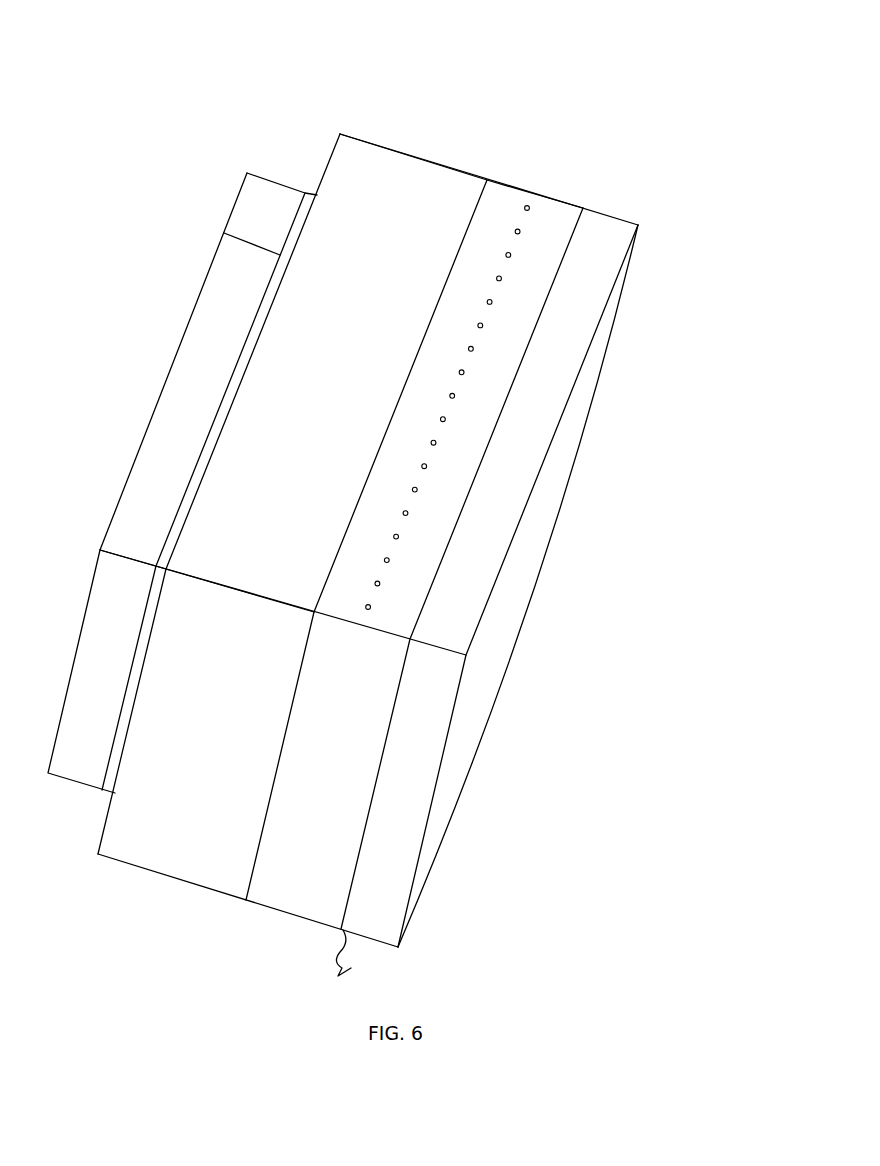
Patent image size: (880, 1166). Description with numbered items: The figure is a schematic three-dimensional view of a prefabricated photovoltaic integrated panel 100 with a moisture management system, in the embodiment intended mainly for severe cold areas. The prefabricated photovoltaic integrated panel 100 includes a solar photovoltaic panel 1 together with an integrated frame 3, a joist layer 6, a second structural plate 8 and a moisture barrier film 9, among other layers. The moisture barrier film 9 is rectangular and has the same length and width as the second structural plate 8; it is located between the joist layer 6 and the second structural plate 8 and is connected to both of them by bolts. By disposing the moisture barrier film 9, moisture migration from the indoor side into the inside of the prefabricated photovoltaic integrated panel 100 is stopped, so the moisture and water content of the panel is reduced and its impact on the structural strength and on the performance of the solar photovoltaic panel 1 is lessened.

The prefabricated photovoltaic integrated panel 100 is at (228, 138).
The solar photovoltaic panel 1 is at (580, 410).
The integrated frame 3 is at (545, 232).
The joist layer 6 is at (397, 197).
The second structural plate 8 is at (205, 375).
The moisture barrier film 9 is at (224, 233).